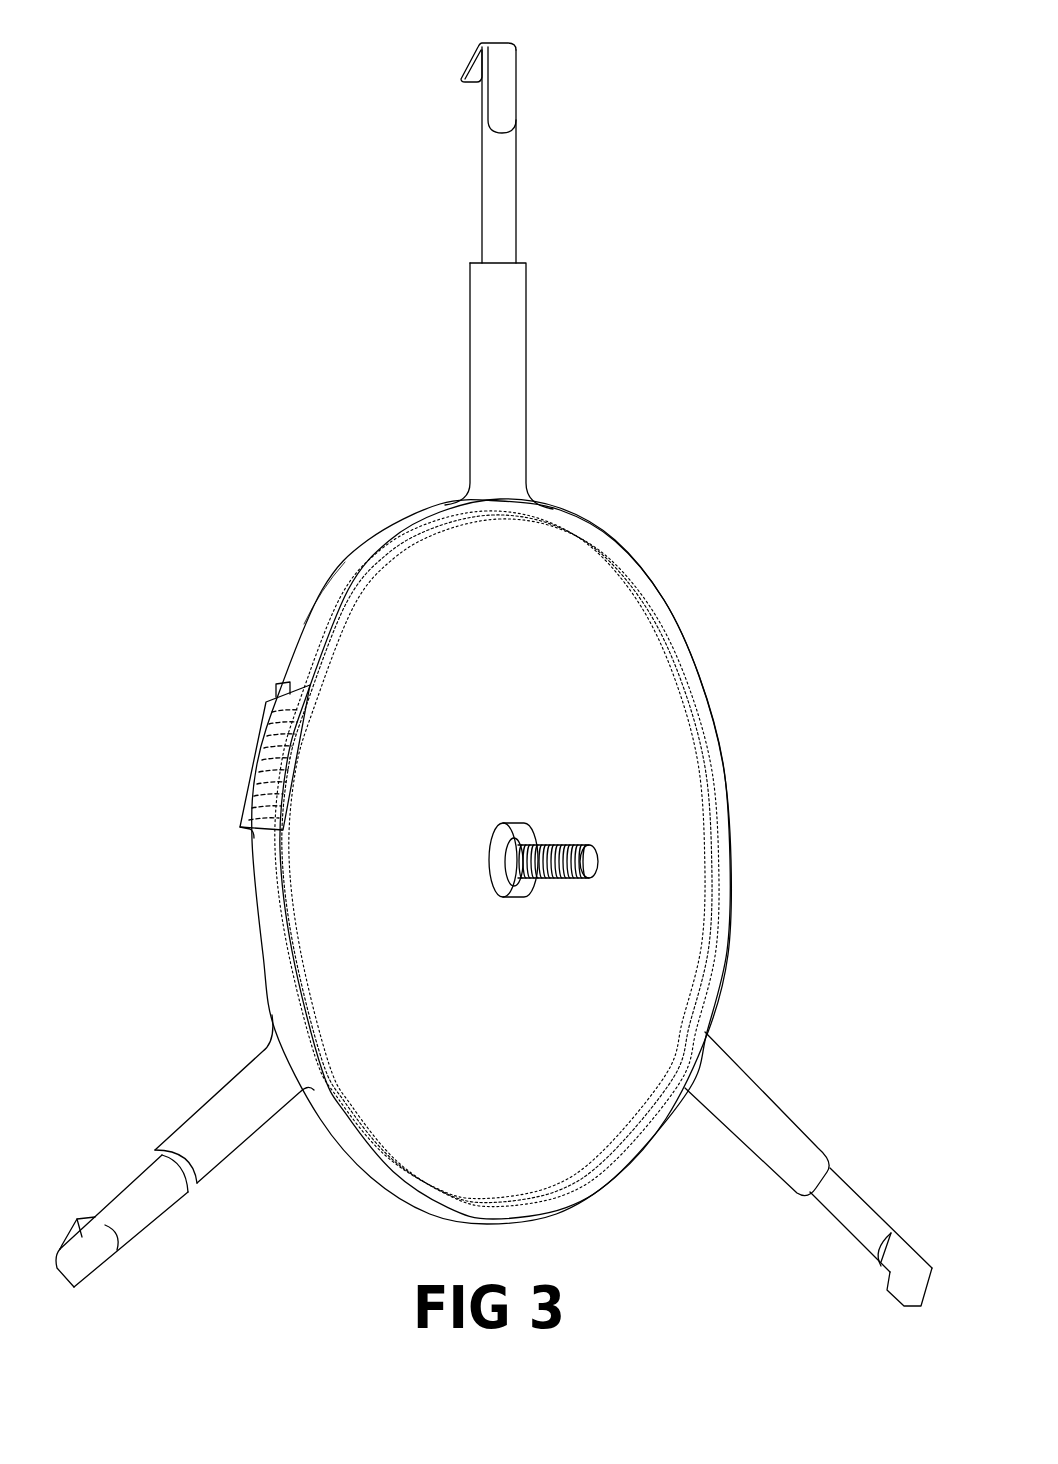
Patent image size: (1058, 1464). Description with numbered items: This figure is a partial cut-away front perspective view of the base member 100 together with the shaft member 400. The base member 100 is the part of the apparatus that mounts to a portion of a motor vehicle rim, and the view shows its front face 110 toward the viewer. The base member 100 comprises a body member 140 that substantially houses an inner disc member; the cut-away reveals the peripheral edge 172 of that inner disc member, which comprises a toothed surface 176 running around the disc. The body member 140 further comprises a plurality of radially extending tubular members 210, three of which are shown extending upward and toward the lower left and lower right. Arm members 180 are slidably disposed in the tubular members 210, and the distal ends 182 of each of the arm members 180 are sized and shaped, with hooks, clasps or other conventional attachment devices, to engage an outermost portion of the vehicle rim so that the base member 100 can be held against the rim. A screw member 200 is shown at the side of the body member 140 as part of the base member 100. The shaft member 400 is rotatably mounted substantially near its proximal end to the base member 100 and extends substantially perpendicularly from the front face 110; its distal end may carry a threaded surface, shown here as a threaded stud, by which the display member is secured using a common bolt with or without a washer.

The base member 100 is at (757, 148).
The front face 110 is at (531, 701).
The body member 140 is at (372, 542).
The peripheral edge 172 is at (337, 595).
The toothed surface 176 is at (438, 512).
The arm members 180 is at (502, 212).
The distal ends 182 is at (503, 68).
The screw member 200 is at (250, 768).
The tubular members 210 is at (502, 378).
The shaft member 400 is at (556, 845).